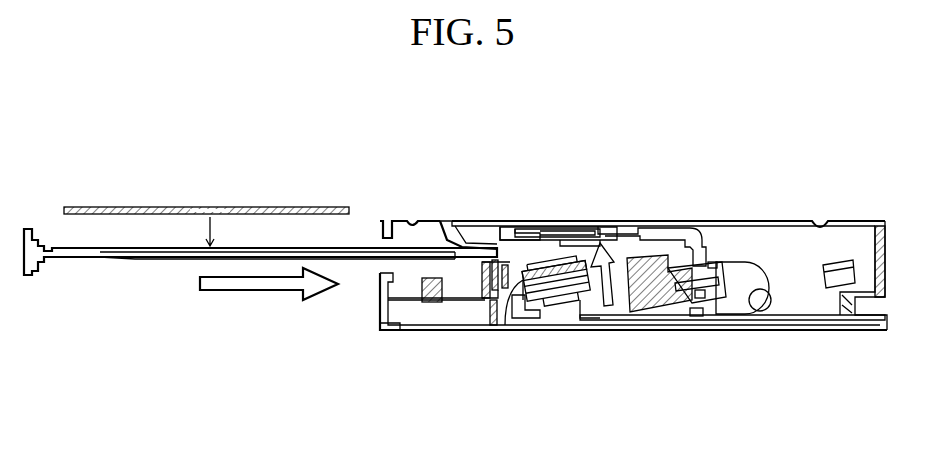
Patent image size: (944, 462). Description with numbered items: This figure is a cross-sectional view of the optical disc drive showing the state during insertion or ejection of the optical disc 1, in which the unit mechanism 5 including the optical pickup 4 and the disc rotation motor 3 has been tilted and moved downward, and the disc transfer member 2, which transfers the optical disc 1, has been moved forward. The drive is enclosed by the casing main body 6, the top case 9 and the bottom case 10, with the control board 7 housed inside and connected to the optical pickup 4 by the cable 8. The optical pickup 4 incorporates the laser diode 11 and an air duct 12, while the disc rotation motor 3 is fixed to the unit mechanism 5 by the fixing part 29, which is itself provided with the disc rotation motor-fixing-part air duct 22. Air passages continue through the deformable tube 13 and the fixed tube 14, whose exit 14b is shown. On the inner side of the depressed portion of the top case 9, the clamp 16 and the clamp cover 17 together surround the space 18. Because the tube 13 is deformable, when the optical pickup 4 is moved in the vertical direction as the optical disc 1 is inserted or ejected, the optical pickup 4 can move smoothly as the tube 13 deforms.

The optical disc 1 is at (100, 206).
The disc transfer member 2 is at (68, 258).
The disc rotation motor 3 is at (506, 307).
The optical pickup 4 is at (627, 328).
The unit mechanism 5 is at (522, 312).
The casing main body 6 is at (488, 305).
The control board 7 is at (660, 322).
The cable 8 is at (753, 317).
The top case 9 is at (425, 218).
The bottom case 10 is at (410, 331).
The laser diode 11 is at (697, 316).
The air duct 12 is at (713, 300).
The deformable tube 13 is at (707, 255).
The fixed tube 14 is at (675, 228).
The exit of the fixed tube 14b is at (634, 226).
The clamp 16 is at (528, 228).
The clamp cover 17 is at (505, 226).
The space 18 is at (607, 220).
The disc rotation motor-fixing-part air duct 22 is at (545, 320).
The fixing part 29 is at (593, 333).